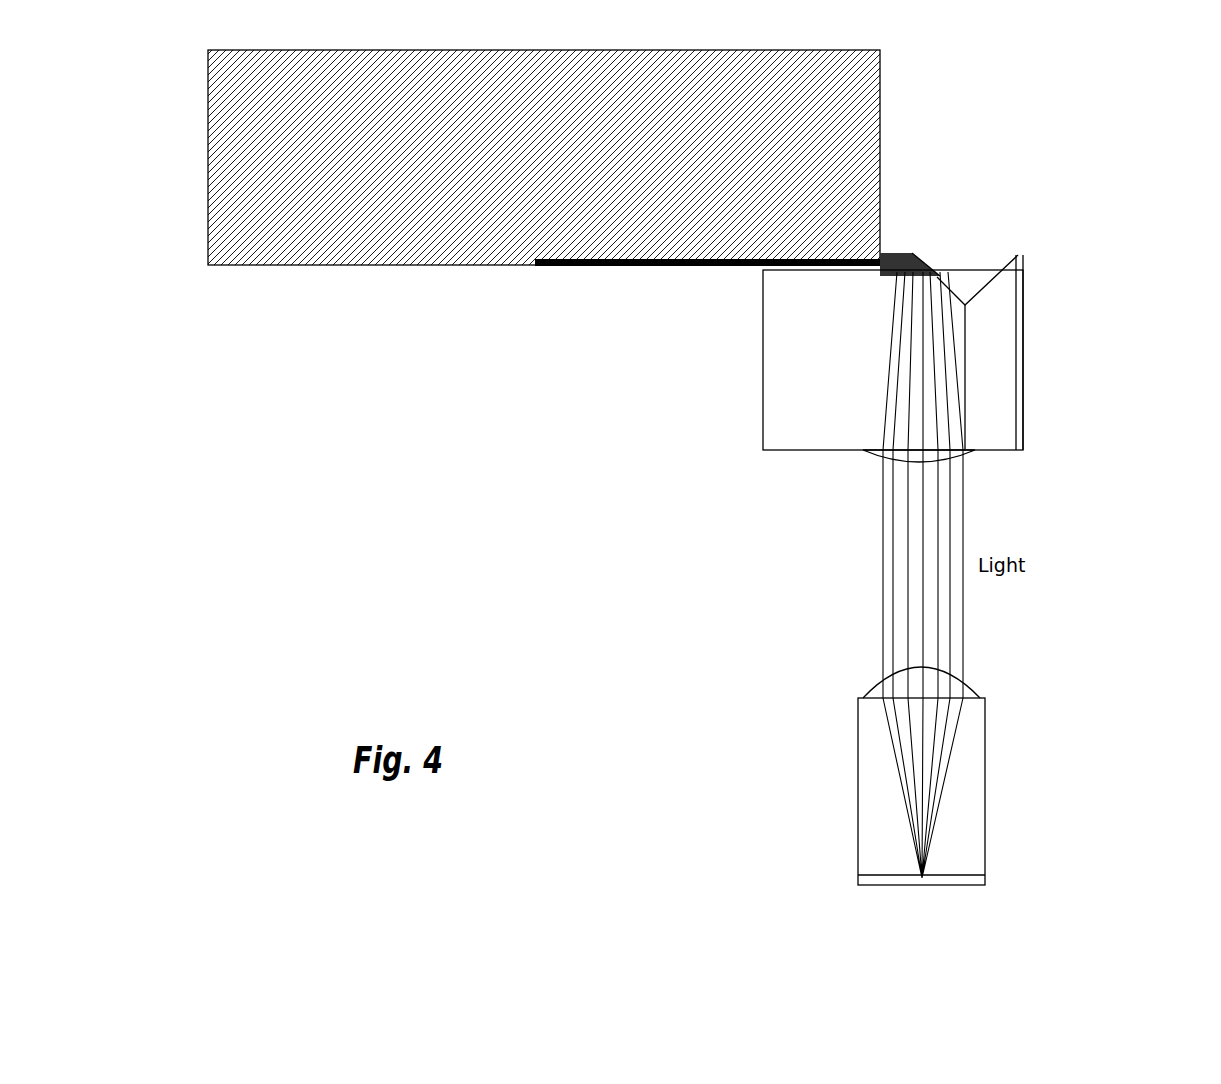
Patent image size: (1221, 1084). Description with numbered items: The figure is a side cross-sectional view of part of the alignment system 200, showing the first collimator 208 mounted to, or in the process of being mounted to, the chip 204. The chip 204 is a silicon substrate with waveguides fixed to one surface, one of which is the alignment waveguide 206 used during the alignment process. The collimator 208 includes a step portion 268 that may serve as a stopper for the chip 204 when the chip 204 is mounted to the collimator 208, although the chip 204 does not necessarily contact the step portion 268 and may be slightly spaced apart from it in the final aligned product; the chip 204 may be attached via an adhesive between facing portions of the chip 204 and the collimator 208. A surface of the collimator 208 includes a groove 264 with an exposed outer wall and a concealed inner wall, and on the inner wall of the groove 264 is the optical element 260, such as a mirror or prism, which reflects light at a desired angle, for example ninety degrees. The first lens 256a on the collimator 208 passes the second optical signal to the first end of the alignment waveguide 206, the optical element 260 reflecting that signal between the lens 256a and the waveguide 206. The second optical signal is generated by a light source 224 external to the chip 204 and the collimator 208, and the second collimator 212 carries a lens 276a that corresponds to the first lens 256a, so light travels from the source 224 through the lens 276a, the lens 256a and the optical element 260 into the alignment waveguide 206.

The alignment system 200 is at (1100, 86).
The chip 204 is at (533, 78).
The alignment waveguide 206 is at (592, 267).
The first collimator 208 is at (795, 380).
The second collimator 212 is at (975, 806).
The light source 224 is at (922, 878).
The first lens 256a is at (975, 452).
The optical element 260 is at (937, 275).
The groove 264 is at (992, 259).
The step portion 268 is at (889, 255).
The lens 276a is at (980, 688).